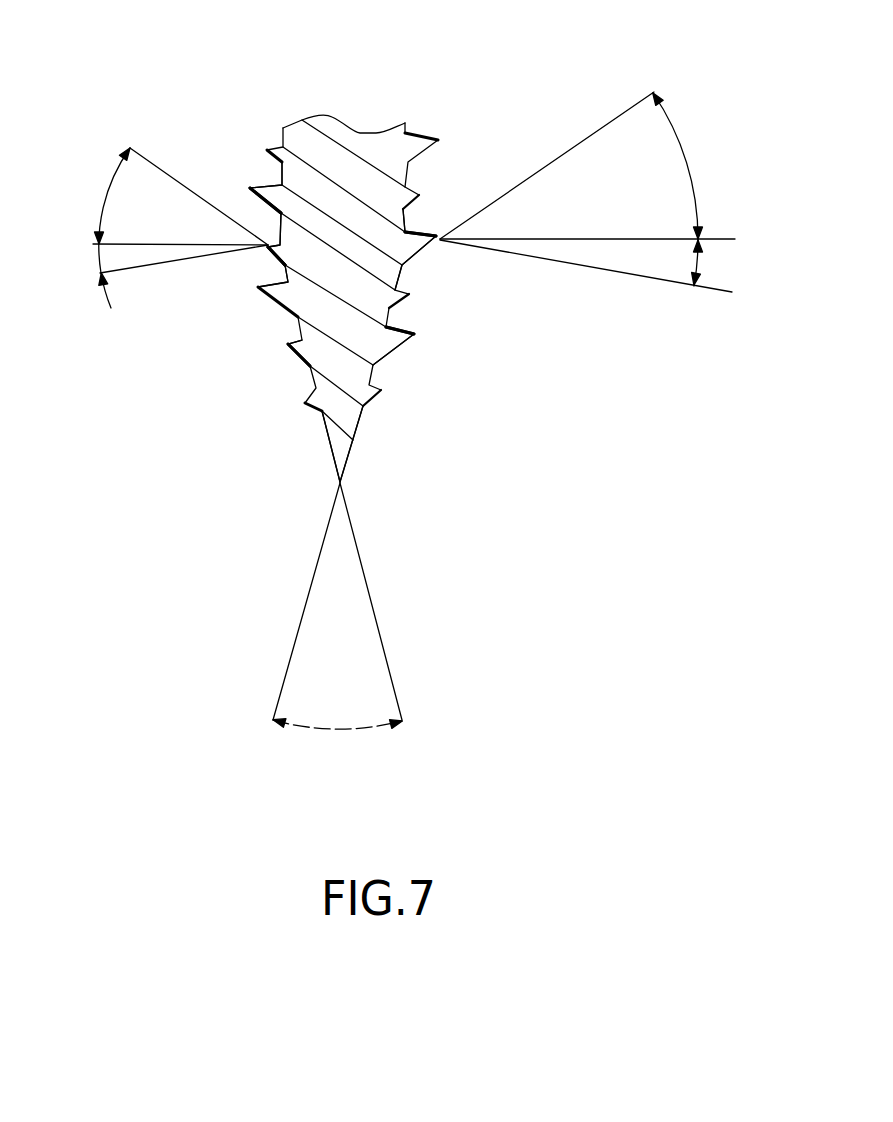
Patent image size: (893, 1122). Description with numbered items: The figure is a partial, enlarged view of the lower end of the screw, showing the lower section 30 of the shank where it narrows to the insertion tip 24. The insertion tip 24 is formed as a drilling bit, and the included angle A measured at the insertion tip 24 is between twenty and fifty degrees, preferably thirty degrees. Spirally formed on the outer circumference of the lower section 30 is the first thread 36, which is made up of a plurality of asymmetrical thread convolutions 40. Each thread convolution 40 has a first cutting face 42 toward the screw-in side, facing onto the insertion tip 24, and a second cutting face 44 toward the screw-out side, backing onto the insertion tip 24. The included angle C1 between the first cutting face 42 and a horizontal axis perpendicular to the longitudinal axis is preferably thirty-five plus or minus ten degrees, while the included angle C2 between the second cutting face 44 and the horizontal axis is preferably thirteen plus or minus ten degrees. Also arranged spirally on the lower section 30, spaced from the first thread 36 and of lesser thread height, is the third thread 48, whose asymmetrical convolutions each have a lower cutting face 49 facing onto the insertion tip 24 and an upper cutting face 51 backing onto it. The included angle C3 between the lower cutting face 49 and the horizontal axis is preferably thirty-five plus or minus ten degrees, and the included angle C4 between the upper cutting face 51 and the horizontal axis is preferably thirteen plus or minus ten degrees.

The insertion tip 24 is at (340, 450).
The lower section 30 is at (318, 140).
The first thread 36 is at (275, 192).
The thread convolutions 40 is at (392, 343).
The first cutting face 42 is at (420, 252).
The second cutting face 44 is at (430, 231).
The third thread 48 is at (292, 346).
The lower cutting face 49 is at (270, 258).
The upper cutting face 51 is at (270, 237).
The included angle C1 is at (590, 165).
The included angle C2 is at (596, 265).
The included angle C3 is at (159, 210).
The included angle C4 is at (153, 276).
The included angle A is at (337, 607).